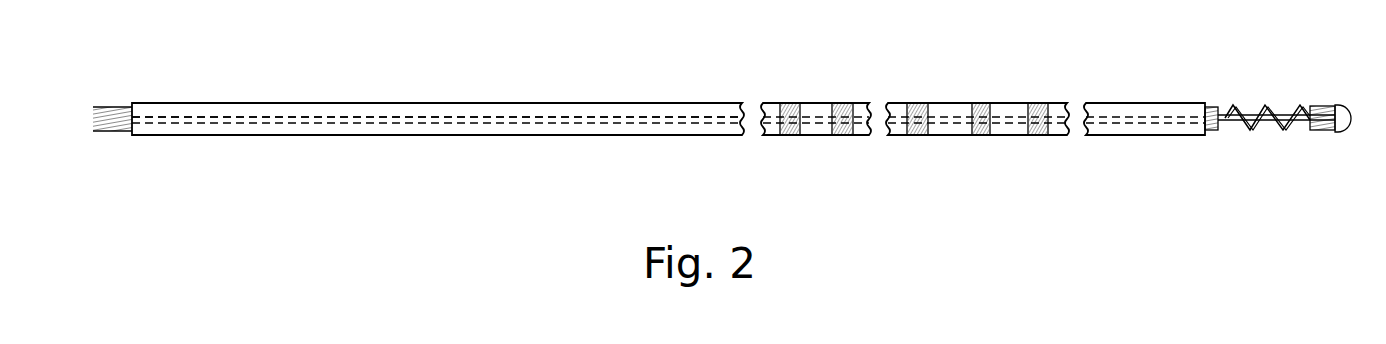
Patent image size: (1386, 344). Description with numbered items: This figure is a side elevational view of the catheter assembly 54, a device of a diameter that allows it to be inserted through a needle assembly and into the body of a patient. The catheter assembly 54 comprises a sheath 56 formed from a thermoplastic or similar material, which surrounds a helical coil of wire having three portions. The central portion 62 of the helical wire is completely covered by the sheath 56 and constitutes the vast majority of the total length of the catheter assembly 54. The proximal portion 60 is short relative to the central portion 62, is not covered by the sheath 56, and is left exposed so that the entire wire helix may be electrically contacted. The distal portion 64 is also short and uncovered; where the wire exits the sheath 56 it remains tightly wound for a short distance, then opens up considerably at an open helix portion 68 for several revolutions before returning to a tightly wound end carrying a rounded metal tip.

The catheter assembly 54 is at (807, 158).
The sheath 56 is at (310, 103).
The proximal portion 60 is at (115, 108).
The central portion 62 is at (543, 90).
The distal portion 64 is at (1257, 93).
The open helix portion 68 is at (1270, 127).